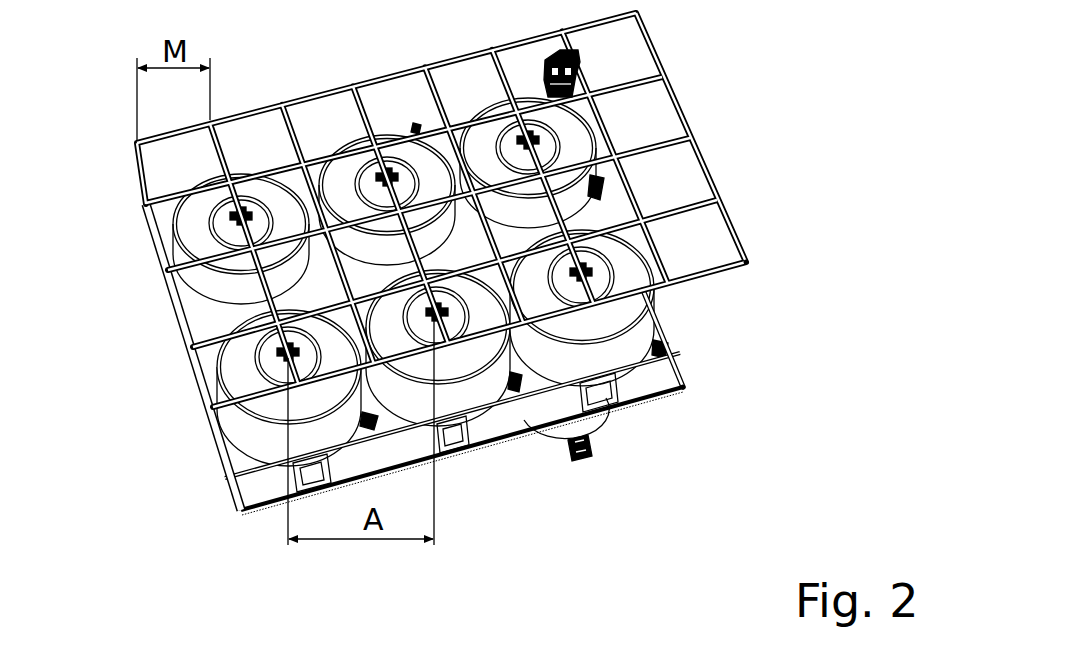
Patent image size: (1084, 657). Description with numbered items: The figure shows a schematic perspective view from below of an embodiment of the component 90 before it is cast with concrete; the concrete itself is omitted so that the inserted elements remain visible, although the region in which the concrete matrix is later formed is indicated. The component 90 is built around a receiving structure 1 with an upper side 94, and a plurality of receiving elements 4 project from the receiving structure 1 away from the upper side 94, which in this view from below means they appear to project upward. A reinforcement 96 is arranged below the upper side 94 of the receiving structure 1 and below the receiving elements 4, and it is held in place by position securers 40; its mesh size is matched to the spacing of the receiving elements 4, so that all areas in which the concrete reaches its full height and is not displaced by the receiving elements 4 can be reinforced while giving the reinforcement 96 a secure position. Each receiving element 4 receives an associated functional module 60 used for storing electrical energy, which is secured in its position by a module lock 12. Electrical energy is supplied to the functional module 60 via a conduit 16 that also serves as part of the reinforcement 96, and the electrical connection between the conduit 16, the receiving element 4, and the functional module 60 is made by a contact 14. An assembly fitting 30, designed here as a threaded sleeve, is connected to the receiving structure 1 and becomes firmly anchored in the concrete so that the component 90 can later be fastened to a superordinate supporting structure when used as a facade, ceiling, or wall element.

The receiving structure 1 is at (157, 238).
The receiving element 4 is at (233, 420).
The module lock 12 is at (590, 457).
The contact 14 is at (527, 138).
The conduit 16 is at (193, 313).
The assembly fitting 30 is at (580, 50).
The position securer 40 is at (284, 358).
The functional module for storing electrical energy 60 is at (547, 438).
The component 90 is at (256, 66).
The upper side 94 is at (649, 410).
The reinforcement 96 is at (749, 260).